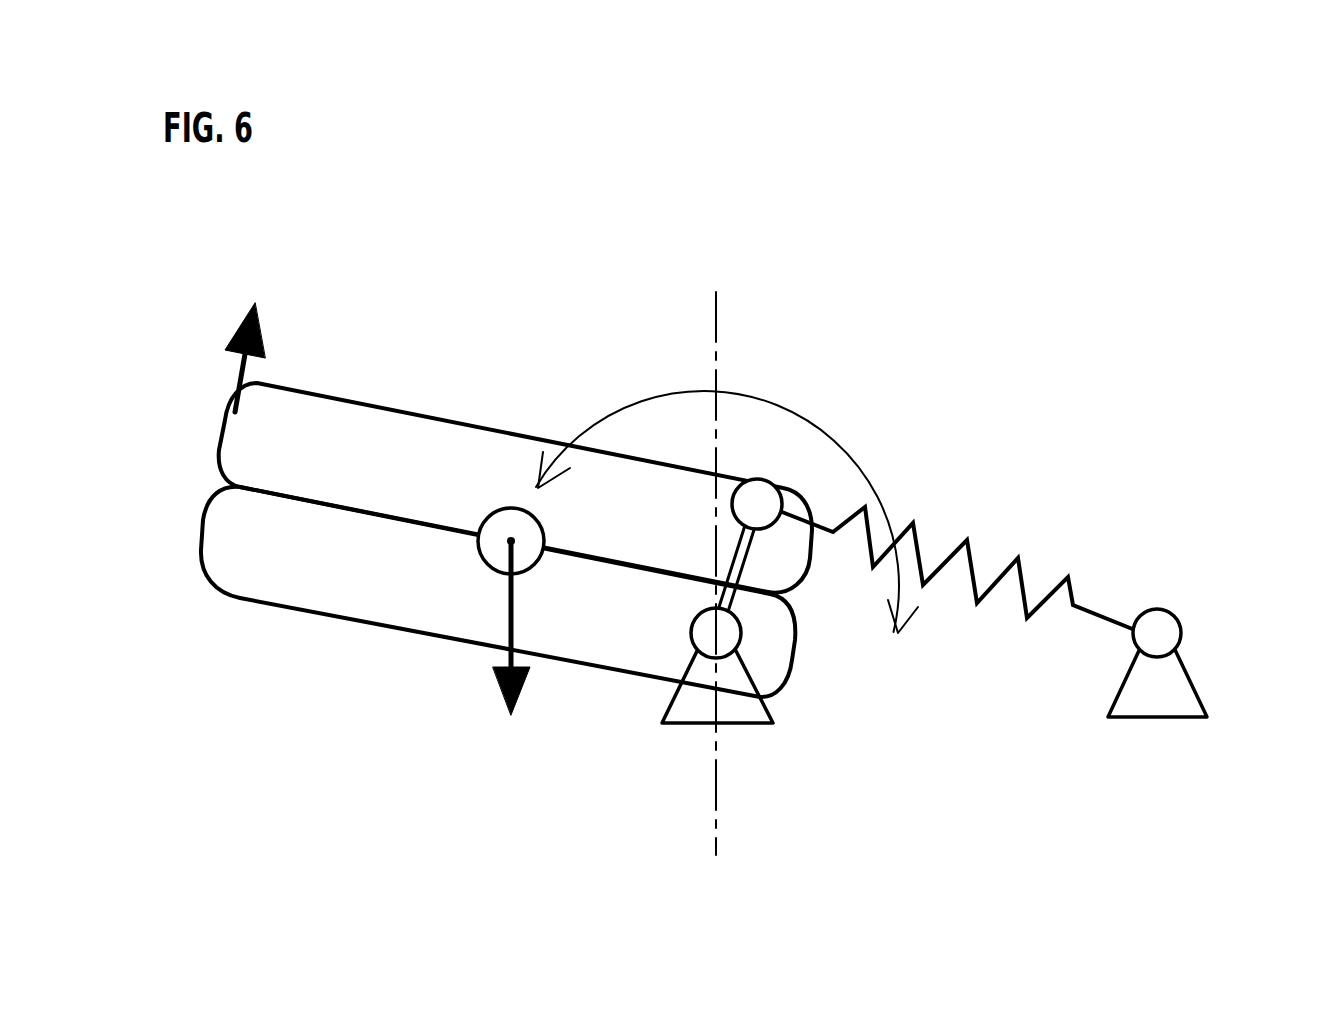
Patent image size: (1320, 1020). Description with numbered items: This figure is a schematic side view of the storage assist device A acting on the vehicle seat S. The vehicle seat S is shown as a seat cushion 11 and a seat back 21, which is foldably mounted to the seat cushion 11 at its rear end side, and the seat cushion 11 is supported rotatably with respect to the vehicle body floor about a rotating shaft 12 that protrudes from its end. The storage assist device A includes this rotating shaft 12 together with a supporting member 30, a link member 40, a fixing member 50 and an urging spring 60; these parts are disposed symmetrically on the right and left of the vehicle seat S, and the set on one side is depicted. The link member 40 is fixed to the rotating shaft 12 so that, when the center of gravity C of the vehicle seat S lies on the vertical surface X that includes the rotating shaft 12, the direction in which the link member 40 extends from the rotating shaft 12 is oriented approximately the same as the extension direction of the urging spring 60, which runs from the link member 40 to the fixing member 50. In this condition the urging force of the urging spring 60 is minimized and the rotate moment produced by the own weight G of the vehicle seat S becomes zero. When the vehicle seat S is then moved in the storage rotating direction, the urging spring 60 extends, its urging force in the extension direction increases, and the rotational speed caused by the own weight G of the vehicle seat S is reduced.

The seat cushion 11 is at (257, 580).
The rotating shaft 12 is at (700, 628).
The seat back 21 is at (318, 418).
The supporting member 30 is at (780, 712).
The link member 40 is at (752, 567).
The fixing member 50 is at (1198, 650).
The urging spring 60 is at (982, 557).
The vehicle seat S is at (502, 377).
The vertical surface X is at (715, 552).
The storage assist device A is at (943, 357).
The center of gravity C is at (483, 550).
The own weight G is at (511, 654).